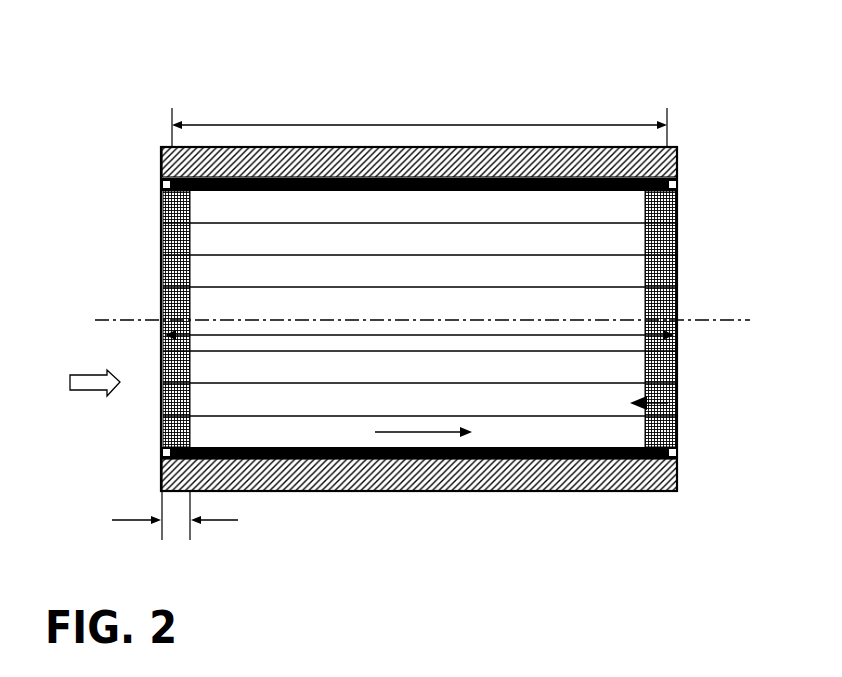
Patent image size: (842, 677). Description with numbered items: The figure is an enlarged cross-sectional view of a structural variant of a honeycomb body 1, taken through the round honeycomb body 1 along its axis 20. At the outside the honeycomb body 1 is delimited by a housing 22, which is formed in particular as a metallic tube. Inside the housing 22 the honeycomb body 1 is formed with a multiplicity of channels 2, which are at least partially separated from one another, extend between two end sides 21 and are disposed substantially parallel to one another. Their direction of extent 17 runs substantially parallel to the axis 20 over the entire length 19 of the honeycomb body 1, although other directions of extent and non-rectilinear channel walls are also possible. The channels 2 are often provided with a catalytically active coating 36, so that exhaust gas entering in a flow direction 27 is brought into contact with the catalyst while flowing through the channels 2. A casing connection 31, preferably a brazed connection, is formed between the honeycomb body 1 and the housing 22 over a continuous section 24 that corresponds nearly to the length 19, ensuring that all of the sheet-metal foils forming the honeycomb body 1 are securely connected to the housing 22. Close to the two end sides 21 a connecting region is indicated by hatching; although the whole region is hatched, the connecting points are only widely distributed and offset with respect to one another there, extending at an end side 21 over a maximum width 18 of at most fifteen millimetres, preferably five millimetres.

The honeycomb body 1 is at (668, 402).
The channels 2 is at (545, 425).
The direction of extent 17 is at (423, 432).
The maximum width 18 is at (175, 533).
The length 19 is at (325, 335).
The axis 20 is at (107, 318).
The end sides 21 is at (160, 233).
The housing 22 is at (355, 163).
The continuous section 24 is at (580, 125).
The flow direction 27 is at (95, 382).
The casing connection 31 is at (485, 175).
The catalytically active coating 36 is at (265, 235).